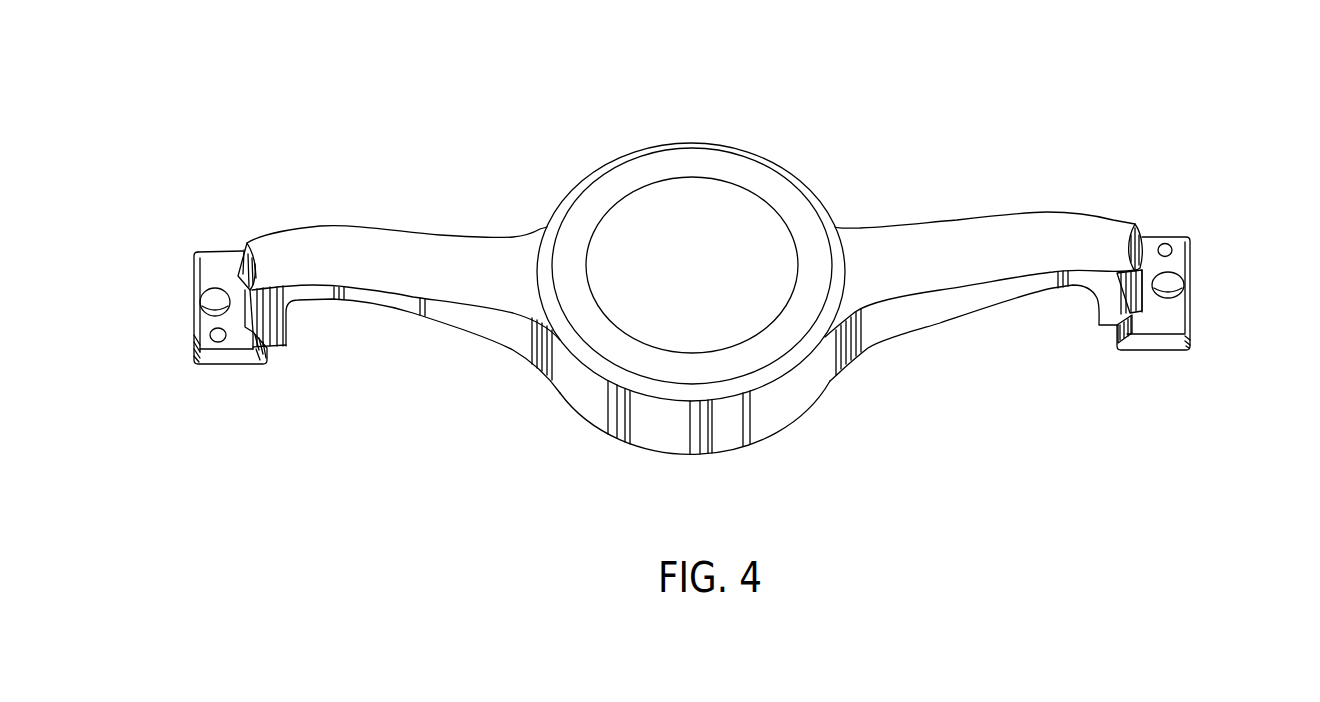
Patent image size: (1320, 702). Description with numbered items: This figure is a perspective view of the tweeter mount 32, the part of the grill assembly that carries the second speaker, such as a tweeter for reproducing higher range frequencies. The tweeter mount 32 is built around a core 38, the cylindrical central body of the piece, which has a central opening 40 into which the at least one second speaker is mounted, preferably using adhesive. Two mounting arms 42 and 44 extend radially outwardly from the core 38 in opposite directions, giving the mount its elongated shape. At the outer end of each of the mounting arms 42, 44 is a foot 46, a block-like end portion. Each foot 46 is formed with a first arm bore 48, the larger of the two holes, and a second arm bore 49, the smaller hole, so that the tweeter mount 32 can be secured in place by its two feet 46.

The tweeter mount 32 is at (1055, 120).
The core 38 is at (617, 158).
The central opening 40 is at (687, 177).
The mounting arm 42 is at (423, 232).
The mounting arm 44 is at (890, 228).
The foot 46 is at (201, 366).
The first arm bore 48 is at (203, 294).
The second arm bore 49 is at (209, 336).